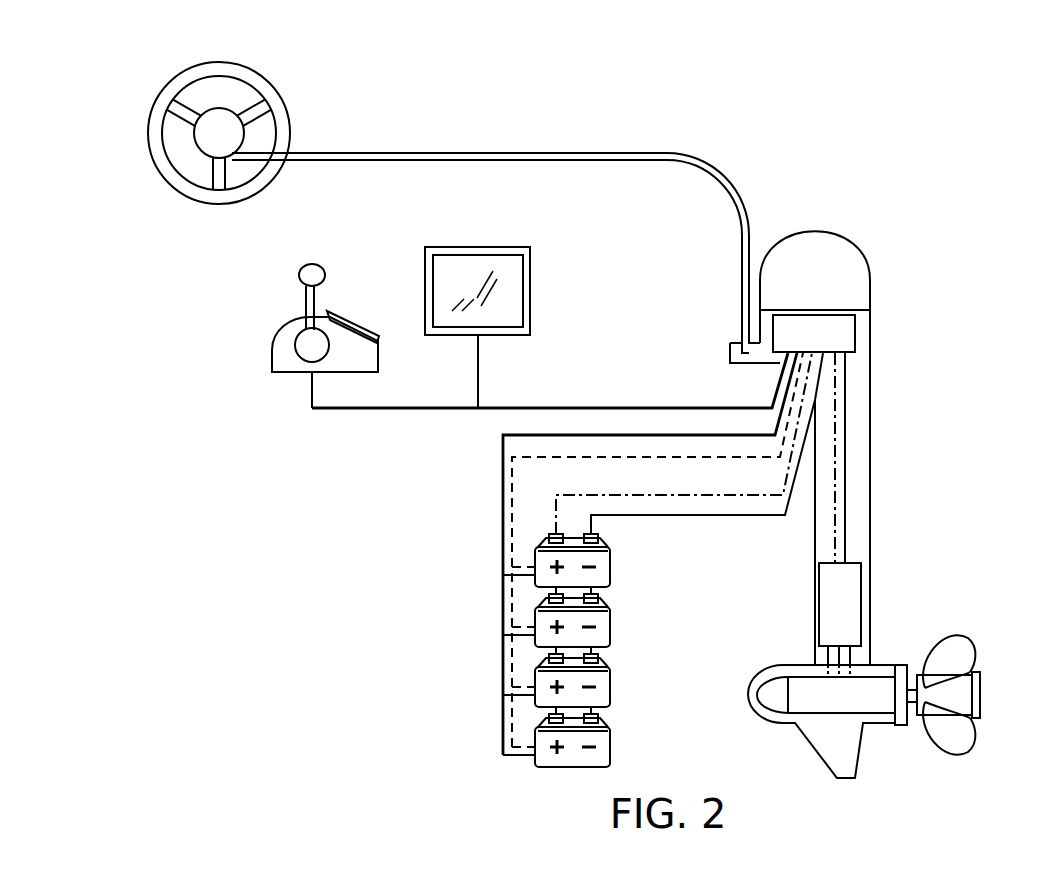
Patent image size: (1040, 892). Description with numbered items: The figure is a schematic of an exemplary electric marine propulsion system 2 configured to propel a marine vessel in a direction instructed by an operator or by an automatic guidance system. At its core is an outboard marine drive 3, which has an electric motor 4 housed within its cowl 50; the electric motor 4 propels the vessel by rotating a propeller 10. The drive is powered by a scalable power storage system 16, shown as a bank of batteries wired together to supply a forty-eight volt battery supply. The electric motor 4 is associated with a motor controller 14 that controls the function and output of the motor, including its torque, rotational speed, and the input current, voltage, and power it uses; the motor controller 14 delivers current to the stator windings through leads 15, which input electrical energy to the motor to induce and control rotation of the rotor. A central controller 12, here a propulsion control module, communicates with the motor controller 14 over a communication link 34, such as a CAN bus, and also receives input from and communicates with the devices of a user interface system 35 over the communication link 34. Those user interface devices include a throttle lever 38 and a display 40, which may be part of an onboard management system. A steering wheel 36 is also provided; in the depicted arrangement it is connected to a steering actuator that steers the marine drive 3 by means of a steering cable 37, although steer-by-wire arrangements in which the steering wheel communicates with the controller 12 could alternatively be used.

The electric marine propulsion system 2 is at (792, 98).
The outboard marine drive 3 is at (858, 245).
The electric motor 4 is at (837, 713).
The propeller 10 is at (955, 735).
The propulsion control module 12 is at (855, 332).
The motor controller 14 is at (862, 585).
The leads 15 is at (828, 655).
The power storage system 16 is at (475, 628).
The communication link 34 is at (594, 408).
The user interface system 35 is at (541, 83).
The steering wheel 36 is at (253, 70).
The steering cable 37 is at (470, 151).
The throttle lever 38 is at (311, 262).
The display 40 is at (483, 247).
The cowl 50 is at (815, 232).